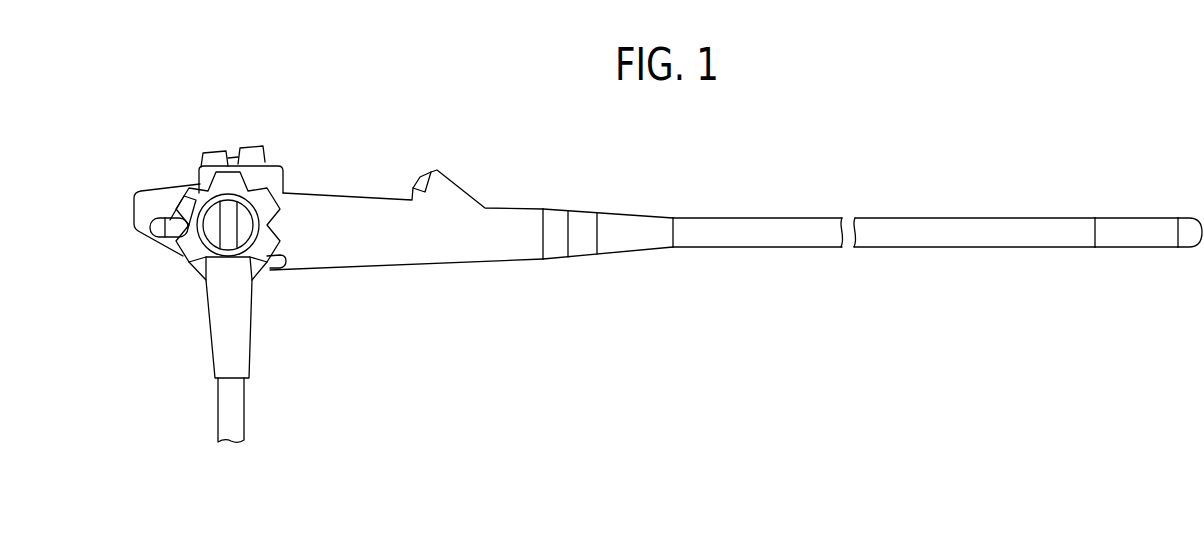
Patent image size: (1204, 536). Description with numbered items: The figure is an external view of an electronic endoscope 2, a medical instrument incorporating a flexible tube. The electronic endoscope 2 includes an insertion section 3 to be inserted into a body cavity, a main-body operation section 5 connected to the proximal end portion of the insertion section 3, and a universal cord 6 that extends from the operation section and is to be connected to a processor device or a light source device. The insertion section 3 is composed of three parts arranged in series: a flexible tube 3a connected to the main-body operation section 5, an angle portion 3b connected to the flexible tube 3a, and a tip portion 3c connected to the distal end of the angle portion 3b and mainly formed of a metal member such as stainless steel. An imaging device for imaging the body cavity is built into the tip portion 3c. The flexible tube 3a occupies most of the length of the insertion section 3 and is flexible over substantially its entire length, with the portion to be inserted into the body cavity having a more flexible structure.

The electronic endoscope 2 is at (536, 205).
The insertion section 3 is at (788, 213).
The flexible tube 3a is at (905, 238).
The angle portion 3b is at (1130, 238).
The tip portion 3c is at (1192, 238).
The main-body operation section 5 is at (397, 247).
The universal cord 6 is at (238, 410).